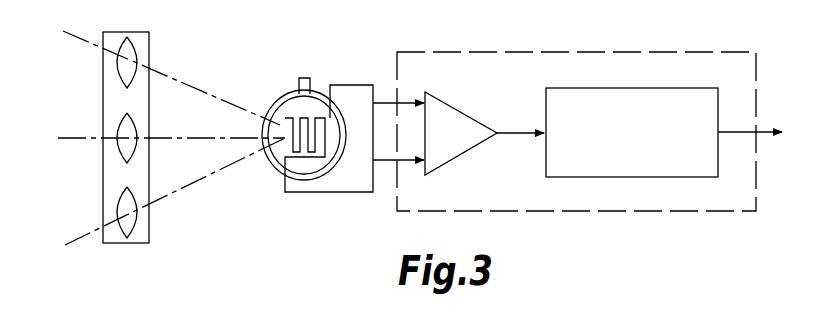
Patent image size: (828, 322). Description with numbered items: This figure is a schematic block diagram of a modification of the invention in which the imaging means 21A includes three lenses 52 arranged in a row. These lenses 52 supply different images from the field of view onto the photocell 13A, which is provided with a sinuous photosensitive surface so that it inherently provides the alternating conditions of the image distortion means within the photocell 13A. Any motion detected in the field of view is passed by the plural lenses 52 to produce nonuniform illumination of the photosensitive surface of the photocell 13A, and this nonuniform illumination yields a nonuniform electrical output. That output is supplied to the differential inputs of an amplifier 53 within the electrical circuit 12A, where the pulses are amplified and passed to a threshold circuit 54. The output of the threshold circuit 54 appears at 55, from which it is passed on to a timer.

The imaging means 21A is at (149, 53).
The lenses 52 is at (117, 72).
The photocell 13A is at (288, 110).
The electrical circuit 12A is at (470, 52).
The amplifier 53 is at (457, 110).
The threshold circuit 54 is at (620, 88).
The output 55 is at (758, 130).